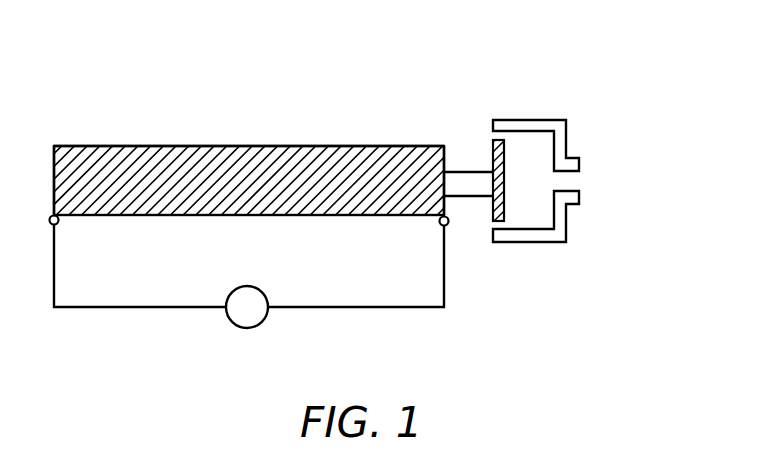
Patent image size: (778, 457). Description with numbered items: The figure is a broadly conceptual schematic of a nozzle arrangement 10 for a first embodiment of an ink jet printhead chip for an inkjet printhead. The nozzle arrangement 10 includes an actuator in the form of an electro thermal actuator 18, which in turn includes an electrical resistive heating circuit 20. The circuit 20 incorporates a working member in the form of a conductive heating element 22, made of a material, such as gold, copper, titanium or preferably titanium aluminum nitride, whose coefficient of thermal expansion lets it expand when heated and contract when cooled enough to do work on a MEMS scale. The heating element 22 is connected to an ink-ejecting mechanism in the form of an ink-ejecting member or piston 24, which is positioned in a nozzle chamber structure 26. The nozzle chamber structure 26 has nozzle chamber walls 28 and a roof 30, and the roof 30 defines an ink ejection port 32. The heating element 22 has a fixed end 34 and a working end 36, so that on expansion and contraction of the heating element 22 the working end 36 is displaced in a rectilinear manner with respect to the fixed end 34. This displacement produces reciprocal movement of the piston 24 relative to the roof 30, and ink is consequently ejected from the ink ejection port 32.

The nozzle arrangement 10 is at (577, 95).
The electro thermal actuator 18 is at (106, 146).
The electrical resistive heating circuit 20 is at (445, 297).
The conductive heating element 22 is at (290, 146).
The piston 24 is at (503, 202).
The nozzle chamber structure 26 is at (530, 166).
The nozzle chamber walls 28 is at (515, 120).
The roof 30 is at (567, 222).
The ink ejection port 32 is at (590, 182).
The fixed end 34 is at (75, 146).
The working end 36 is at (438, 146).